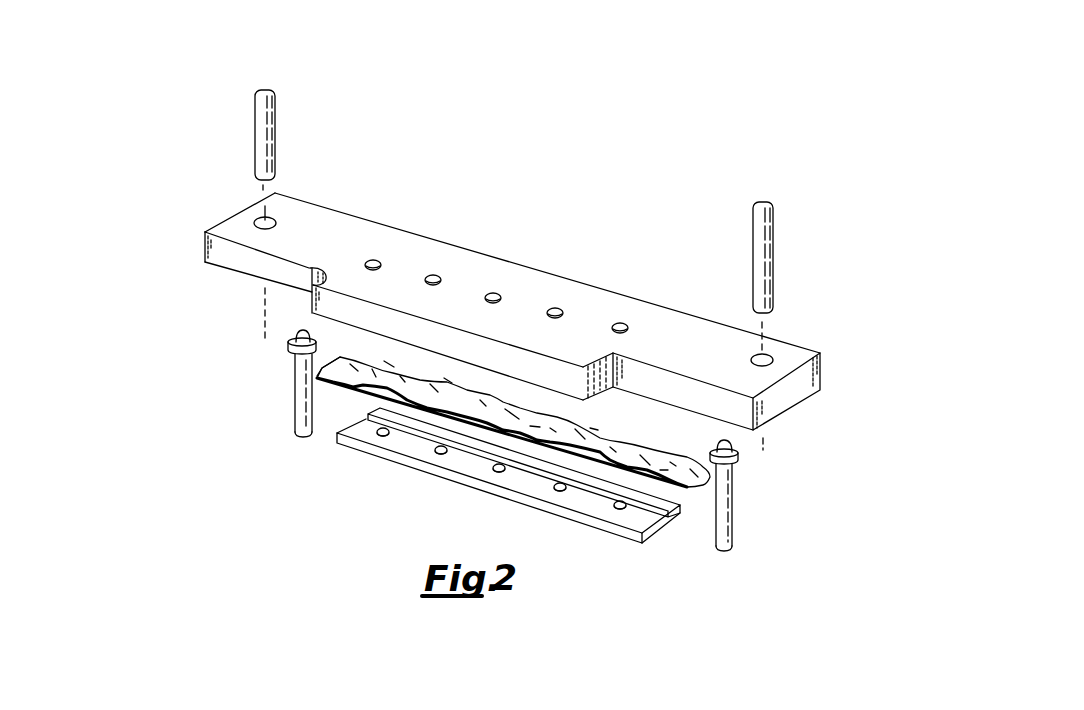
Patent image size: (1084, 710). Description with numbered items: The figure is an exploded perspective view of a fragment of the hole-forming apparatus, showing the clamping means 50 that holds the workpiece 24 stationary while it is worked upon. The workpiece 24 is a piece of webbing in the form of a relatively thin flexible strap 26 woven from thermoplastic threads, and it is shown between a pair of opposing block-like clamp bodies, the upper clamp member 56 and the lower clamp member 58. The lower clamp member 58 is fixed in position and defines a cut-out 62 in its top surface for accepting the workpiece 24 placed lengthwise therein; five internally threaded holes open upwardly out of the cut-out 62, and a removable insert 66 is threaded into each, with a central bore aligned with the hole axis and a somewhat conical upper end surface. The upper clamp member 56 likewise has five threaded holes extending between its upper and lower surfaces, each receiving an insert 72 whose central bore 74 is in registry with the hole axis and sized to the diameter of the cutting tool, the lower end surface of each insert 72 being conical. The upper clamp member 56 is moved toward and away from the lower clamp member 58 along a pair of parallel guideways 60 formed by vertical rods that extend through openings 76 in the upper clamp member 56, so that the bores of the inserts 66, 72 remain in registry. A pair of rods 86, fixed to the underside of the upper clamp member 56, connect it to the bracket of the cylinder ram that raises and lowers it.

The workpiece 24 is at (597, 440).
The strap 26 is at (363, 390).
The clamping means 50 is at (194, 216).
The upper clamp member 56 is at (403, 248).
The lower clamp member 58 is at (658, 530).
The guideways 60 is at (270, 131).
The cut-out 62 is at (642, 514).
The removable insert 66 is at (557, 492).
The insert 72 is at (550, 314).
The central bore 74 is at (498, 296).
The openings 76 is at (273, 219).
The rods 86 is at (295, 385).